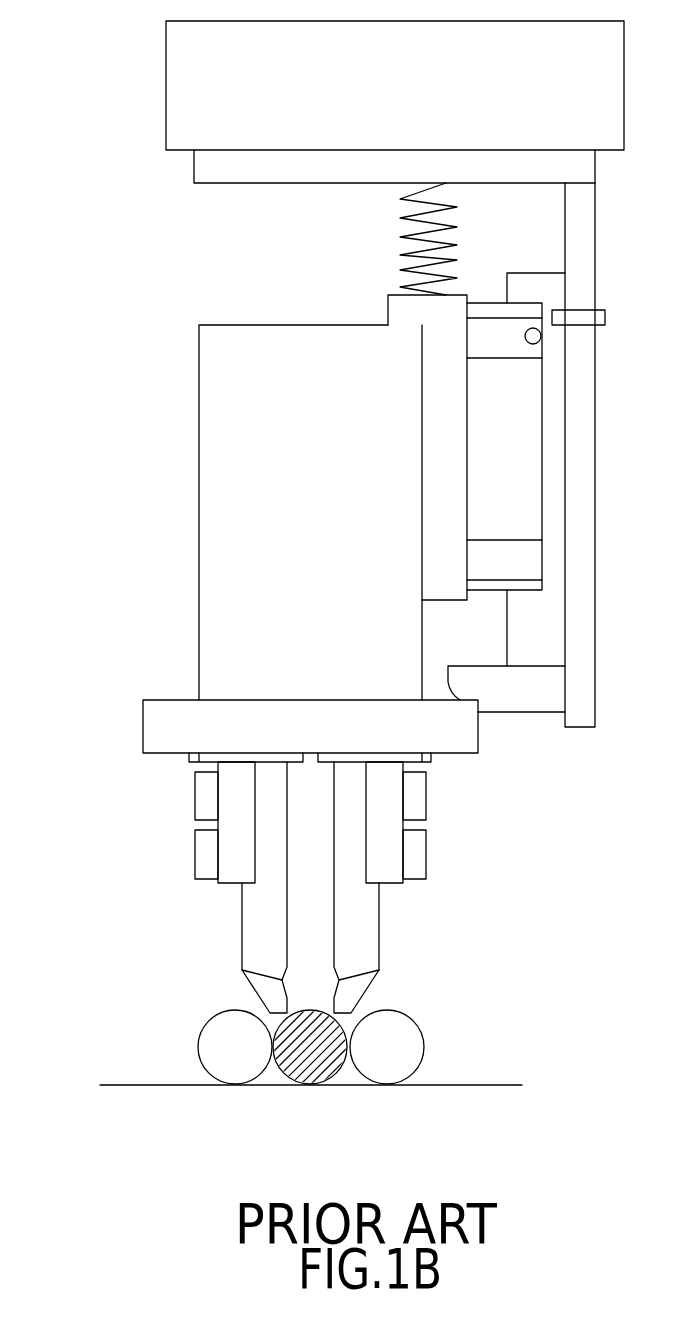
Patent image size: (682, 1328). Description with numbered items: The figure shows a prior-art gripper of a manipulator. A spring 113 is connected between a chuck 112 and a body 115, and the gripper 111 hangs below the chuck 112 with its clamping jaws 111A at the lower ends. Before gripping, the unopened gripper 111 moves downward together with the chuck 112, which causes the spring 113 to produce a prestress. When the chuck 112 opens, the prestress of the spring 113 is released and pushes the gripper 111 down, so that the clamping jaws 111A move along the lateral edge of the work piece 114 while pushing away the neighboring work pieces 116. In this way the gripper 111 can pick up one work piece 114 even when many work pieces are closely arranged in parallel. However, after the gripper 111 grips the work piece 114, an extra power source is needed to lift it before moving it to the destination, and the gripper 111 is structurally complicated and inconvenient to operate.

The body 115 is at (213, 93).
The spring 113 is at (417, 248).
The chuck 112 is at (172, 497).
The gripper 111 is at (222, 925).
The clamping jaws 111A is at (242, 970).
The work piece 114 is at (303, 1068).
The neighboring work pieces 116 is at (230, 1070).